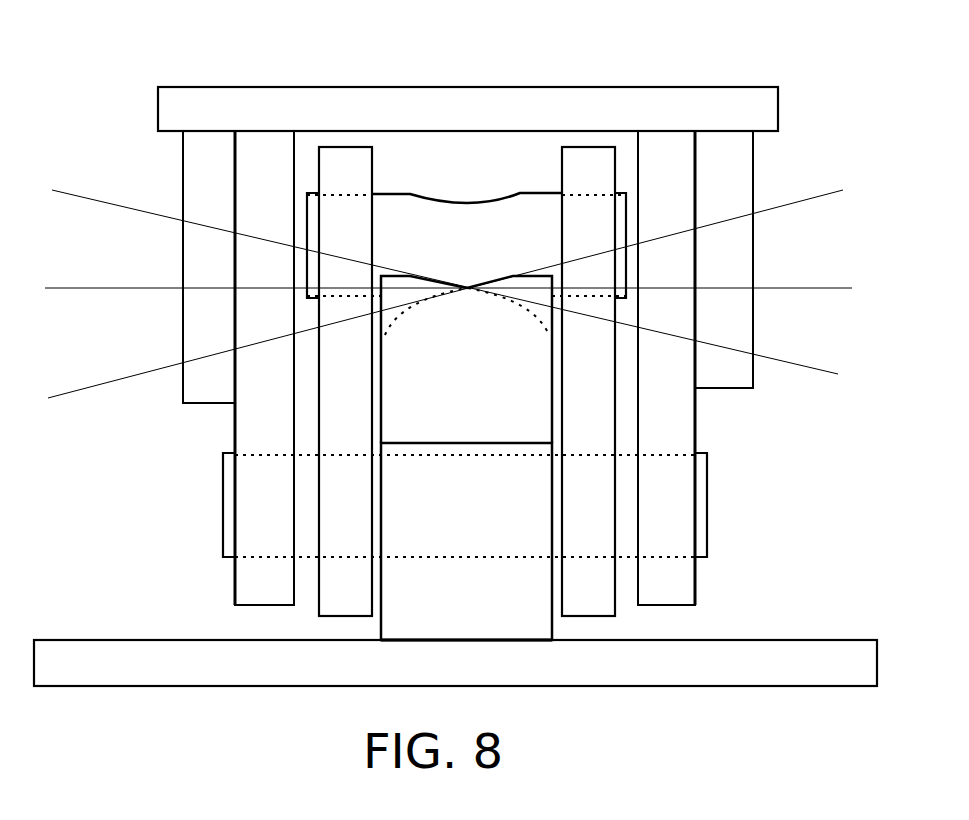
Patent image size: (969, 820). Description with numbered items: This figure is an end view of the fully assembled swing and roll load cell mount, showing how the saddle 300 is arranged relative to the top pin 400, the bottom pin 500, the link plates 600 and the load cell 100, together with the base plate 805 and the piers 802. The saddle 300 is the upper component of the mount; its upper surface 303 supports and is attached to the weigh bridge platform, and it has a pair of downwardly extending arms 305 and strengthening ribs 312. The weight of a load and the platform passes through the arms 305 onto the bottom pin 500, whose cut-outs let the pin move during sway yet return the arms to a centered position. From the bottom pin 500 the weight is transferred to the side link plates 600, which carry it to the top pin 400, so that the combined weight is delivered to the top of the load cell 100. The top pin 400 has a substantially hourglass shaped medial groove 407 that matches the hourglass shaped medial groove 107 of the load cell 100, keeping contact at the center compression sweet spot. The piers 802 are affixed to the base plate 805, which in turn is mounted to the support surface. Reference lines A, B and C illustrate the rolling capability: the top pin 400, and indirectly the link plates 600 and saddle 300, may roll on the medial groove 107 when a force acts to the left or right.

The saddle 300 is at (233, 86).
The upper surface 303 is at (700, 83).
The strengthening ribs 312 is at (183, 243).
The downwardly extending arms 305 is at (235, 582).
The link plates 600 is at (463, 390).
The top pin 400 is at (627, 267).
The hourglass shaped medial groove 407 is at (467, 203).
The load cell 100 is at (370, 427).
The hourglass shaped medial groove 107 is at (395, 318).
The piers 802 is at (378, 625).
The bottom pin 500 is at (707, 497).
The base plate 805 is at (693, 686).
The reference line A is at (464, 281).
The reference line B is at (466, 287).
The reference line C is at (463, 292).